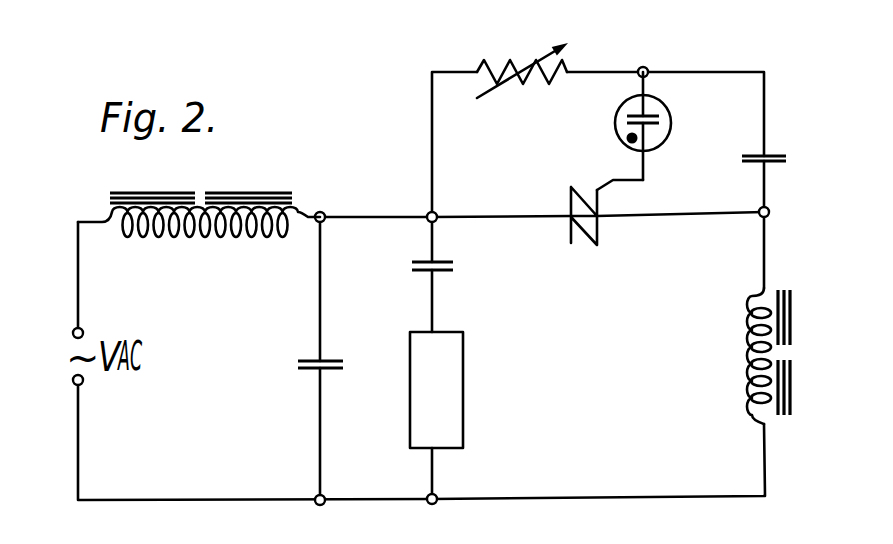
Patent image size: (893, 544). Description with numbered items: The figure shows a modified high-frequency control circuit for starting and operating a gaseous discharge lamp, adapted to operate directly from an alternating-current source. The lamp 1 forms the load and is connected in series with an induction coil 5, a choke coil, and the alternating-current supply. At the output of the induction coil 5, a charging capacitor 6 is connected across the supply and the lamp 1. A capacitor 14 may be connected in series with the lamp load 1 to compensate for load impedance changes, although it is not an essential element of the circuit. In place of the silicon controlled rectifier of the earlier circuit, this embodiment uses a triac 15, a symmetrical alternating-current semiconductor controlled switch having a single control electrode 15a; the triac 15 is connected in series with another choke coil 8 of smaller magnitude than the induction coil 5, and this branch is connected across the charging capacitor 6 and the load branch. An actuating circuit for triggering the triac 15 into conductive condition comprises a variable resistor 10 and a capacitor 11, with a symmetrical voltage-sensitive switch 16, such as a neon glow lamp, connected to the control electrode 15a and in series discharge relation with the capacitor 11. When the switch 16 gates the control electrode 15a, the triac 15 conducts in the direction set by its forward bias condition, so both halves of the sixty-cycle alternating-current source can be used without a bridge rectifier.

The lamp 1 is at (465, 402).
The induction coil 5 is at (281, 185).
The charging capacitor 6 is at (362, 359).
The choke coil 8 is at (795, 358).
The variable resistor 10 is at (515, 59).
The capacitor 11 is at (790, 160).
The capacitor 14 is at (458, 266).
The triac 15 is at (600, 233).
The control electrode 15a is at (596, 186).
The symmetrical voltage-sensitive switch 16 is at (672, 124).